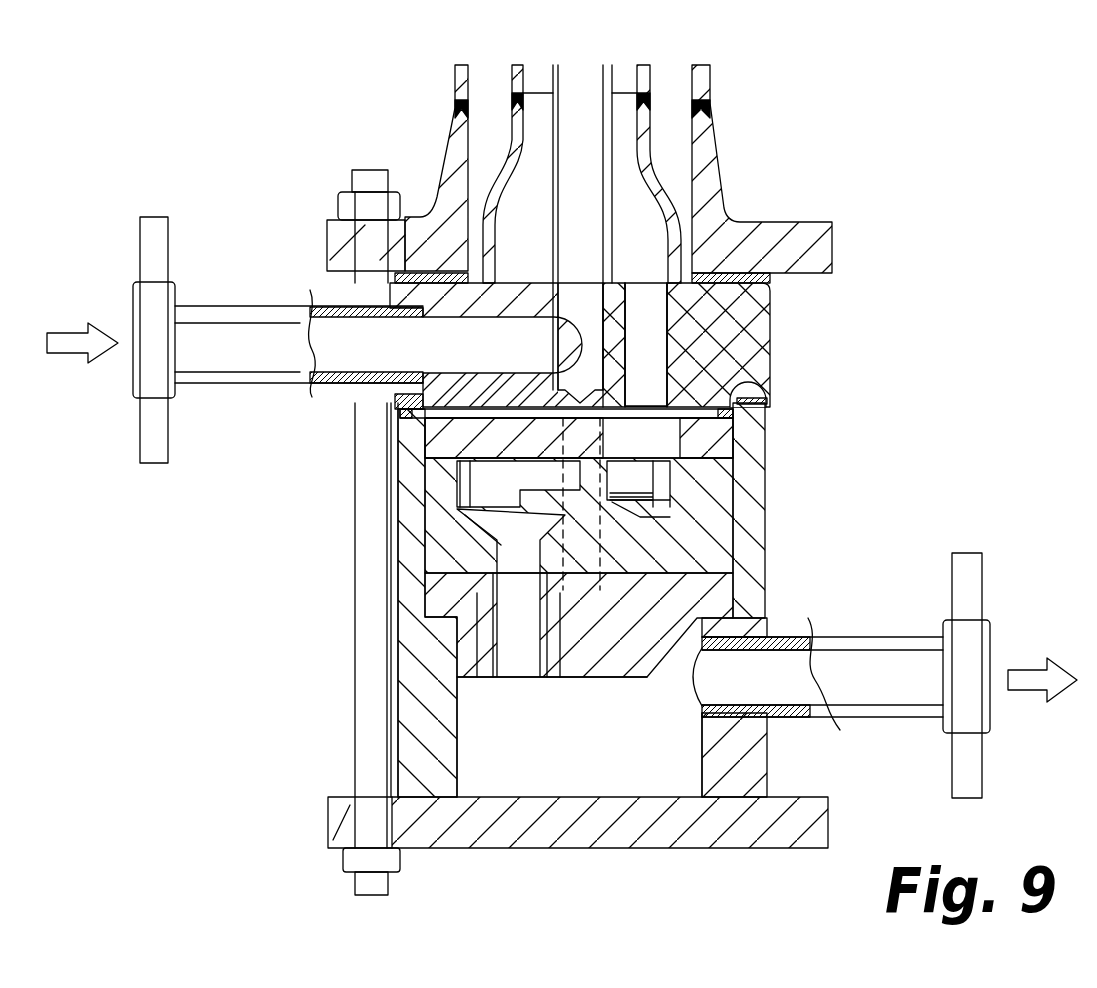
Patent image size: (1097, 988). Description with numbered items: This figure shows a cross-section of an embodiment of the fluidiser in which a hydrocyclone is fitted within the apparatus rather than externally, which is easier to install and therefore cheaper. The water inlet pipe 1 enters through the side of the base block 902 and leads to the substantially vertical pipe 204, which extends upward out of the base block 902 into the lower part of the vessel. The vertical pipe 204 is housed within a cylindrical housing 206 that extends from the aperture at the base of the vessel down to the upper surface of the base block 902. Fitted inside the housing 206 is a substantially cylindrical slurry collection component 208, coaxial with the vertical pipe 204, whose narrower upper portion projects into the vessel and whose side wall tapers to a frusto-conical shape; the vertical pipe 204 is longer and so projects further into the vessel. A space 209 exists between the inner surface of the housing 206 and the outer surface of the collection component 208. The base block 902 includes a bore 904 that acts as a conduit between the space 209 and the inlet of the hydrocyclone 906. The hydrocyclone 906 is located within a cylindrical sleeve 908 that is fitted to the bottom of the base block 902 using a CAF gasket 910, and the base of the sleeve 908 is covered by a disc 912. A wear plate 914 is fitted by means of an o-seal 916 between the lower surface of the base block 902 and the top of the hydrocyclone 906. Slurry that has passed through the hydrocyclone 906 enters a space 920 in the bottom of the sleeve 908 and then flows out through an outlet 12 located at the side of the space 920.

The water inlet pipe 1 is at (214, 316).
The outlet 12 is at (882, 653).
The vertical pipe 204 is at (552, 80).
The cylindrical housing 206 is at (702, 88).
The slurry collection component 208 is at (647, 78).
The space 209 is at (663, 123).
The base block 902 is at (743, 317).
The bore 904 is at (645, 364).
The hydrocyclone 906 is at (703, 490).
The cylindrical sleeve 908 is at (407, 548).
The CAF gasket 910 is at (397, 405).
The disc 912 is at (505, 832).
The wear plate 914 is at (703, 435).
The o-seal 916 is at (758, 382).
The space 920 is at (648, 765).